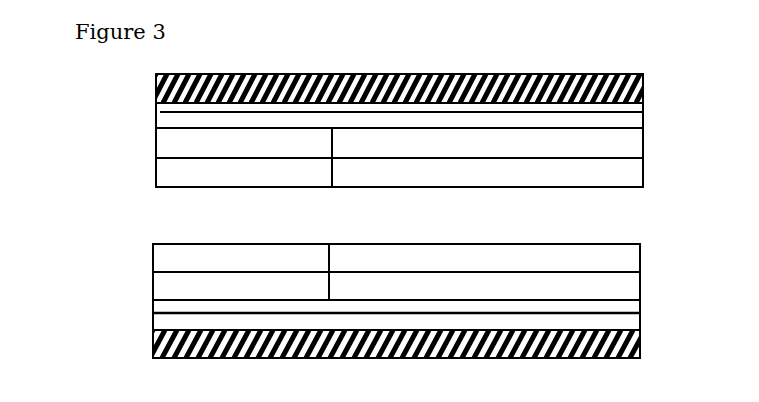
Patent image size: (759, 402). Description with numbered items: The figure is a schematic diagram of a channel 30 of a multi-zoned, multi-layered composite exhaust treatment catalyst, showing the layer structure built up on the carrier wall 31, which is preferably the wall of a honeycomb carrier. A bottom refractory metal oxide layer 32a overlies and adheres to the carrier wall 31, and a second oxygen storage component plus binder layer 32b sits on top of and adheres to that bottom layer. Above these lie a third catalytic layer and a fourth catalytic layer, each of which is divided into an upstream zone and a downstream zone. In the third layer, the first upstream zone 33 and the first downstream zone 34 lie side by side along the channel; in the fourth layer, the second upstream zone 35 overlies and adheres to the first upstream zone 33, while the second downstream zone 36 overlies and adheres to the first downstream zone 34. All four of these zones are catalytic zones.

The channel 30 is at (396, 284).
The carrier wall 31 is at (141, 341).
The bottom refractory metal oxide layer 32a is at (141, 317).
The oxygen storage component + binder layer 32b is at (640, 307).
The first upstream zone 33 is at (141, 287).
The first downstream zone 34 is at (640, 289).
The second upstream zone 35 is at (141, 260).
The second downstream zone 36 is at (640, 255).